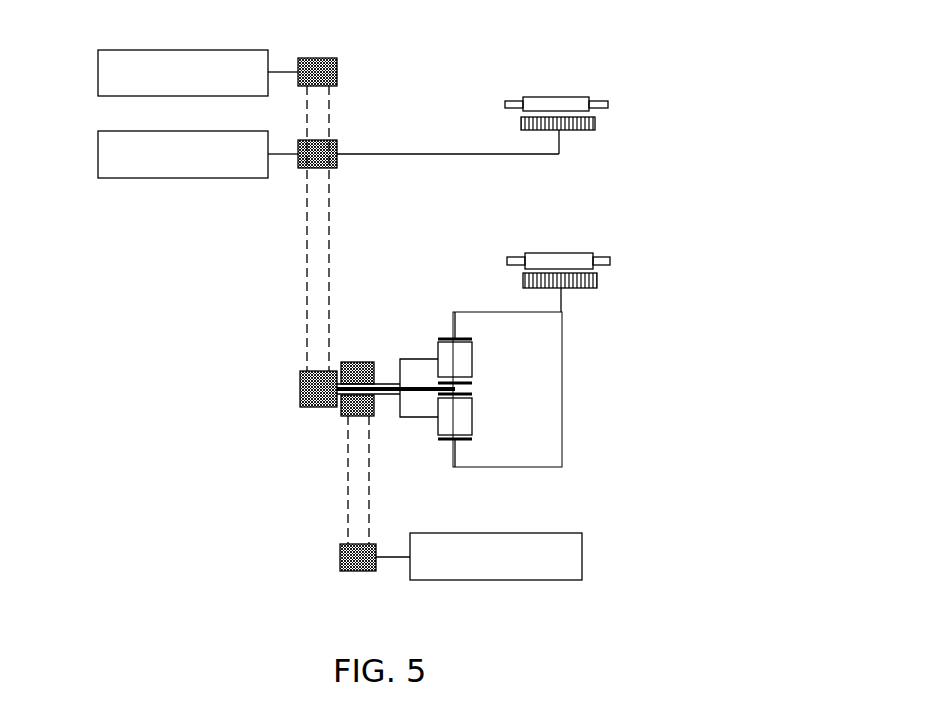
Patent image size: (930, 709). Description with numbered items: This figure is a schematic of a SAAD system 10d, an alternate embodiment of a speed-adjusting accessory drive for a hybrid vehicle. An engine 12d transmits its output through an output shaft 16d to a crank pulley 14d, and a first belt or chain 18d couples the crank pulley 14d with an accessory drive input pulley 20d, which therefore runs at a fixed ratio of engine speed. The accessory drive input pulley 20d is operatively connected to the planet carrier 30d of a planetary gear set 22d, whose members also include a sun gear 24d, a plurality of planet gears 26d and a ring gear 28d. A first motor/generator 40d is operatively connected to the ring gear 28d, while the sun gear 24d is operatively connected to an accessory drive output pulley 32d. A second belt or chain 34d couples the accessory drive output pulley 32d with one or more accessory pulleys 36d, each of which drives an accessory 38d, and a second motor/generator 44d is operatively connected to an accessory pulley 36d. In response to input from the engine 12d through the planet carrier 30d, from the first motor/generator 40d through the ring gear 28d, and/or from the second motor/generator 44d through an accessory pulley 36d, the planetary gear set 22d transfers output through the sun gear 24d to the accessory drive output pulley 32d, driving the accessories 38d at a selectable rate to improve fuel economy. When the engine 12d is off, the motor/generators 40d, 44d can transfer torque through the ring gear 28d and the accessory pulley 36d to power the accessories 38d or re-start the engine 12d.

The SAAD system 10d is at (710, 96).
The engine 12d is at (545, 580).
The crank pulley 14d is at (352, 571).
The output shaft 16d is at (393, 557).
The first belt or chain 18d is at (347, 485).
The accessory drive input pulley 20d is at (360, 362).
The planetary gear set 22d is at (570, 433).
The sun gear 24d is at (456, 388).
The planet gears 26d is at (460, 367).
The ring gear 28d is at (462, 339).
The planet carrier 30d is at (420, 417).
The accessory drive output pulley 32d is at (300, 381).
The second belt or chain 34d is at (331, 248).
The accessory pulley 36d is at (320, 58).
The accessory 38d is at (104, 50).
The first motor/generator 40d is at (583, 252).
The second motor/generator 44d is at (583, 95).